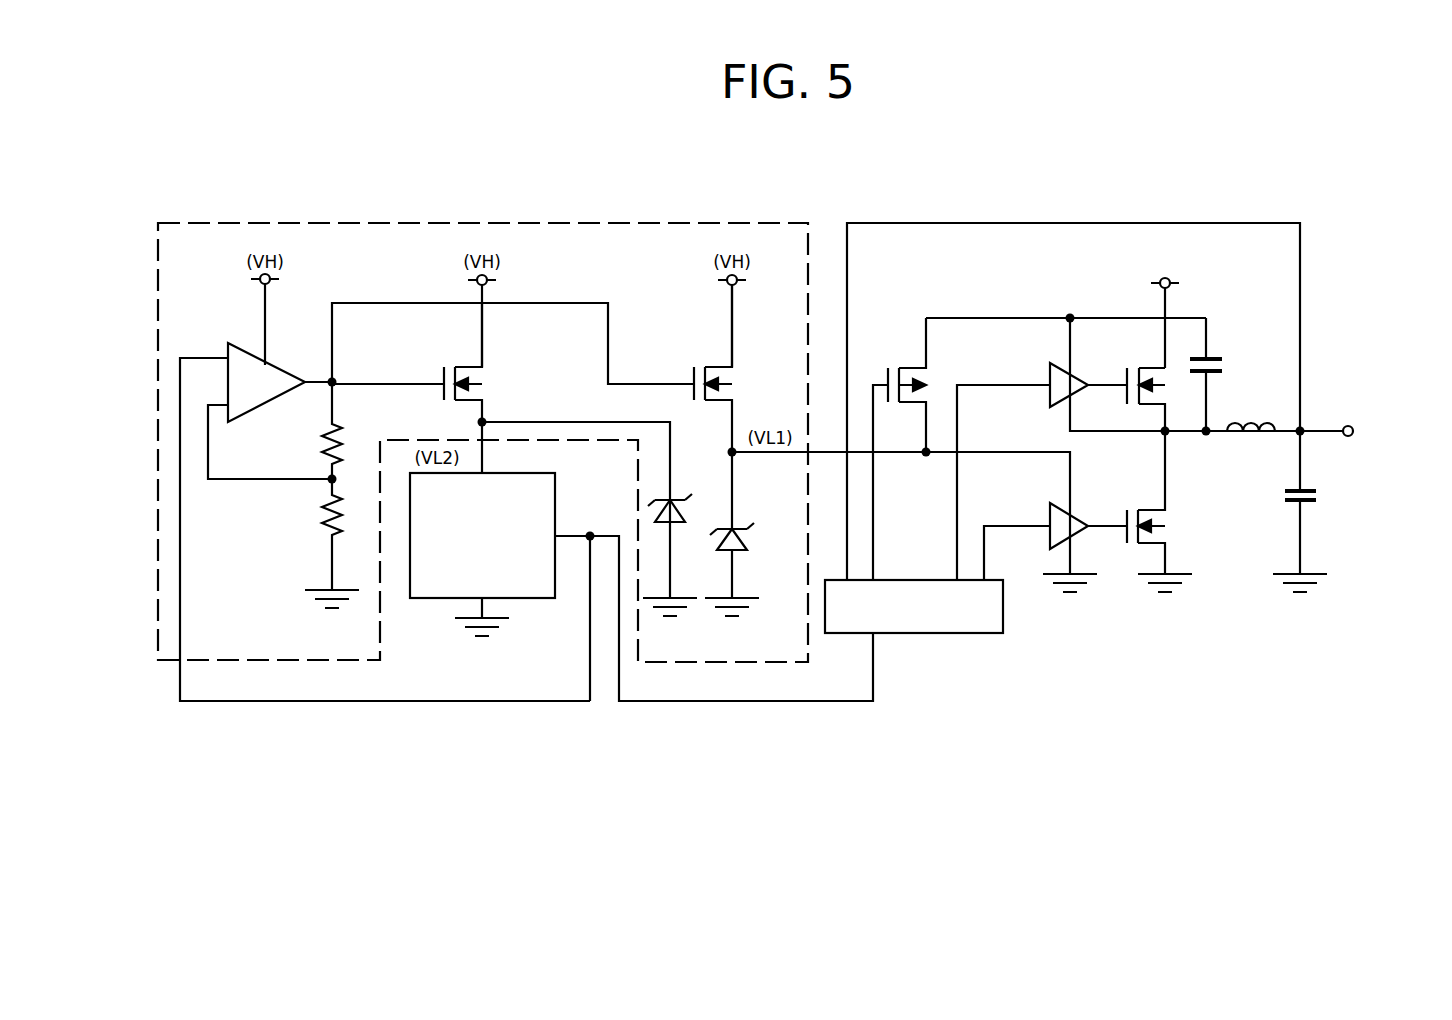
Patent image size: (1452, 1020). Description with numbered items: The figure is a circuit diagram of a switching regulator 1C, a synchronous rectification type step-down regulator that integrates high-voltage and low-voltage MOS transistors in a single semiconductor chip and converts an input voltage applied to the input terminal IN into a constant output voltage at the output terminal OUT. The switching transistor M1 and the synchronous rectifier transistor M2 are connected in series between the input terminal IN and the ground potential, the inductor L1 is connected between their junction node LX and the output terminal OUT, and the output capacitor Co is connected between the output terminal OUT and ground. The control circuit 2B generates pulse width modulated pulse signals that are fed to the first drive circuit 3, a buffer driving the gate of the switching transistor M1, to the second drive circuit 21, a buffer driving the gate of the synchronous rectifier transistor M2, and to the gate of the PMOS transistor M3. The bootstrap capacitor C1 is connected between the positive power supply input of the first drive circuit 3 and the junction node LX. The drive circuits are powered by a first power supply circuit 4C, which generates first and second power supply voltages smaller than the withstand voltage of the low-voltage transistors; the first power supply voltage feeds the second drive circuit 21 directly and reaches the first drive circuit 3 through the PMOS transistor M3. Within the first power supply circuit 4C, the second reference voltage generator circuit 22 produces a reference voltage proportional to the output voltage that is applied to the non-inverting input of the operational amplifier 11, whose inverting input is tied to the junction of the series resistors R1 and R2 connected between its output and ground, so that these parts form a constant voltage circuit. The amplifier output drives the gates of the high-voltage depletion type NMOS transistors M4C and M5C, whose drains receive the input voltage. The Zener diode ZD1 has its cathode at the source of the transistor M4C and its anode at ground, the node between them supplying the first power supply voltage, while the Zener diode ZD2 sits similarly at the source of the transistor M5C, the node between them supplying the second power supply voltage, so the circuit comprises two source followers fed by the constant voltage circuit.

The first power supply circuit 4C is at (580, 212).
The switching regulator 1C is at (1065, 212).
The operational amplifier 11 is at (284, 366).
The resistor R1 is at (318, 430).
The resistor R2 is at (327, 558).
The high-voltage depletion type NMOS transistor M5C is at (459, 362).
The high-voltage depletion type NMOS transistor M4C is at (709, 368).
The second reference voltage generator circuit 22 is at (535, 598).
The Zener diode ZD2 is at (678, 542).
The Zener diode ZD1 is at (740, 534).
The PMOS transistor M3 is at (899, 449).
The control circuit 2B is at (983, 633).
The first drive circuit 3 is at (1090, 380).
The second drive circuit 21 is at (1090, 521).
The input terminal IN is at (1169, 287).
The switching transistor M1 is at (1146, 389).
The synchronous rectifier transistor M2 is at (1159, 526).
The bootstrap capacitor C1 is at (1223, 374).
The junction node LX is at (1169, 435).
The inductor L1 is at (1263, 416).
The output capacitor Co is at (1309, 511).
The output terminal OUT is at (1352, 435).